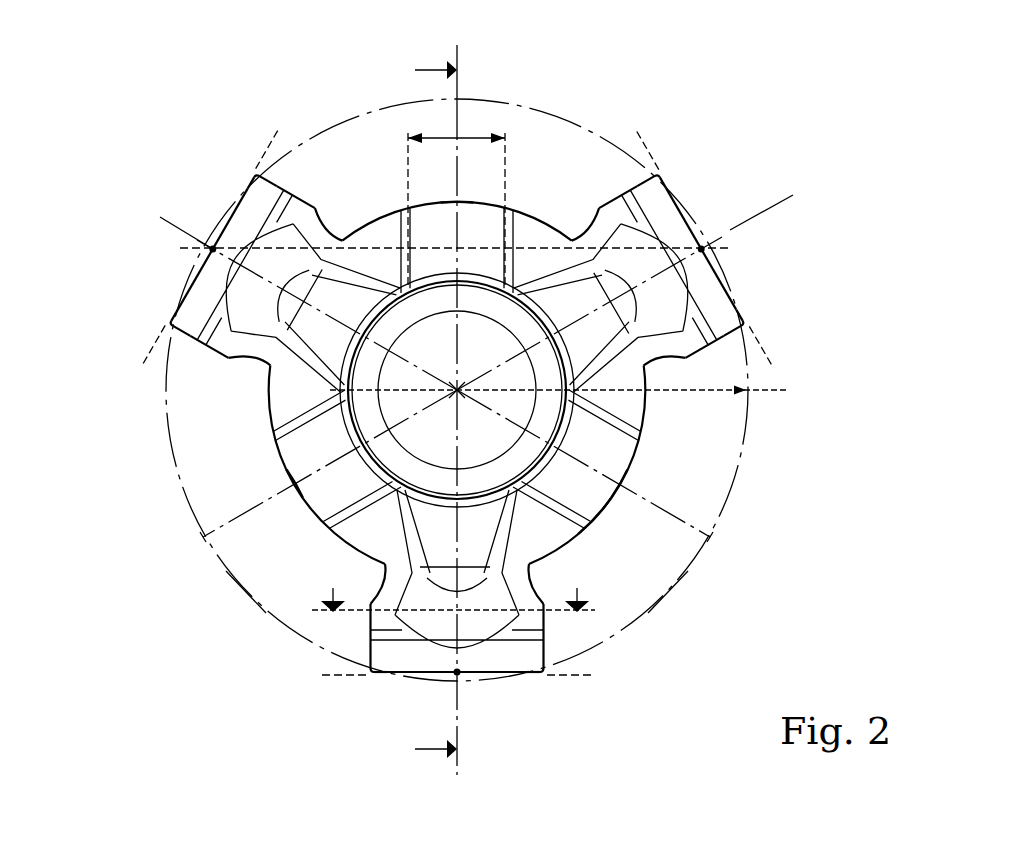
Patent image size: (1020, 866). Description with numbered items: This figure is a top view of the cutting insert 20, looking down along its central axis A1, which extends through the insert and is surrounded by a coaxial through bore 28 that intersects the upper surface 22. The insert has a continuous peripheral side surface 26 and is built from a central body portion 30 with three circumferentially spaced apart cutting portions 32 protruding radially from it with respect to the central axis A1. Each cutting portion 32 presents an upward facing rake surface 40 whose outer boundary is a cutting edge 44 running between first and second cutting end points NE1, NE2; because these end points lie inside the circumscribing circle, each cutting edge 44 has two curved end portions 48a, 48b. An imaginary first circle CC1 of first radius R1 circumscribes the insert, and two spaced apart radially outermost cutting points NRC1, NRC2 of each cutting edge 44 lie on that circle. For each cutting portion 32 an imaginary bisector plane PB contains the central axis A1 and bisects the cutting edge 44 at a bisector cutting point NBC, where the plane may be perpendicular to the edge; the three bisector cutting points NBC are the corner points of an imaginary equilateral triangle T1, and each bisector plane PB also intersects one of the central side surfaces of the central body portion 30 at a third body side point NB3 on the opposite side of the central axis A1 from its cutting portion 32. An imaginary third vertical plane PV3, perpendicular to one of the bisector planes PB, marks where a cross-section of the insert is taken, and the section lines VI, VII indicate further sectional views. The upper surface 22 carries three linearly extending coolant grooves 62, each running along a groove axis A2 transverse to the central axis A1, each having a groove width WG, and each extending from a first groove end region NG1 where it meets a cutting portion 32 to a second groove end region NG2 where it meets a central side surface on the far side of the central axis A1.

The cutting insert 20 is at (267, 546).
The upper surface 22 is at (534, 263).
The peripheral side surface 26 is at (604, 512).
The through bore 28 is at (446, 356).
The central body portion 30 is at (621, 410).
The cutting portion 32 is at (195, 352).
The rake surface 40 is at (207, 293).
The cutting edge 44 is at (232, 212).
The curved end portion 48a is at (177, 327).
The curved end portion 48b is at (253, 177).
The coolant groove 62 is at (344, 344).
The central axis A1 is at (445, 412).
The groove axis A2 is at (450, 485).
The imaginary bisector plane PB is at (499, 410).
The third body side point NB3 is at (458, 203).
The bisector cutting point NBC is at (212, 250).
The first cutting end point NE1 is at (175, 318).
The second cutting end point NE2 is at (258, 177).
The first groove end region NG1 is at (443, 581).
The second groove end region NG2 is at (466, 241).
The radially outermost cutting point NRC1 is at (176, 314).
The radially outermost cutting point NRC2 is at (250, 177).
The imaginary first circle CC1 is at (752, 449).
The first radius R1 is at (573, 389).
The imaginary equilateral triangle T1 is at (374, 250).
The groove width WG is at (456, 200).
The section line VI is at (436, 402).
The section line VII is at (455, 595).
The imaginary third vertical plane PV3 is at (457, 594).